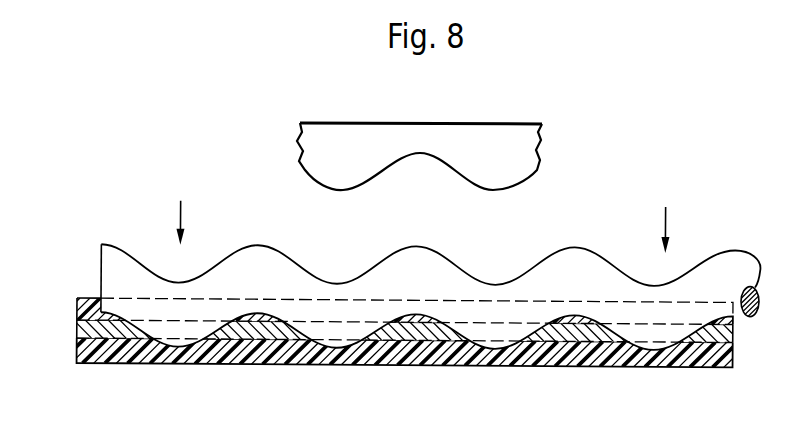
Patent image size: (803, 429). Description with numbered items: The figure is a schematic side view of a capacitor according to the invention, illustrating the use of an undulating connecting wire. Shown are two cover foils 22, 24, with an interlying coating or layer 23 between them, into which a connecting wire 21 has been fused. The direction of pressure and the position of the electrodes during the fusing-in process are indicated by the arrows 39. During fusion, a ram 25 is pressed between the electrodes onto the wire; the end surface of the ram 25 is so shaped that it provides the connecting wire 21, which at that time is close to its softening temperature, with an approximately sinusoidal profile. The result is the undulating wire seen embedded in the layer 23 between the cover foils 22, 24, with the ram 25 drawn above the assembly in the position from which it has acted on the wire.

The connecting wire 21 is at (722, 262).
The cover foil 22 is at (80, 303).
The interlying coating or layer 23 is at (78, 330).
The cover foil 24 is at (283, 384).
The ram 25 is at (578, 132).
The arrows 39 is at (692, 178).